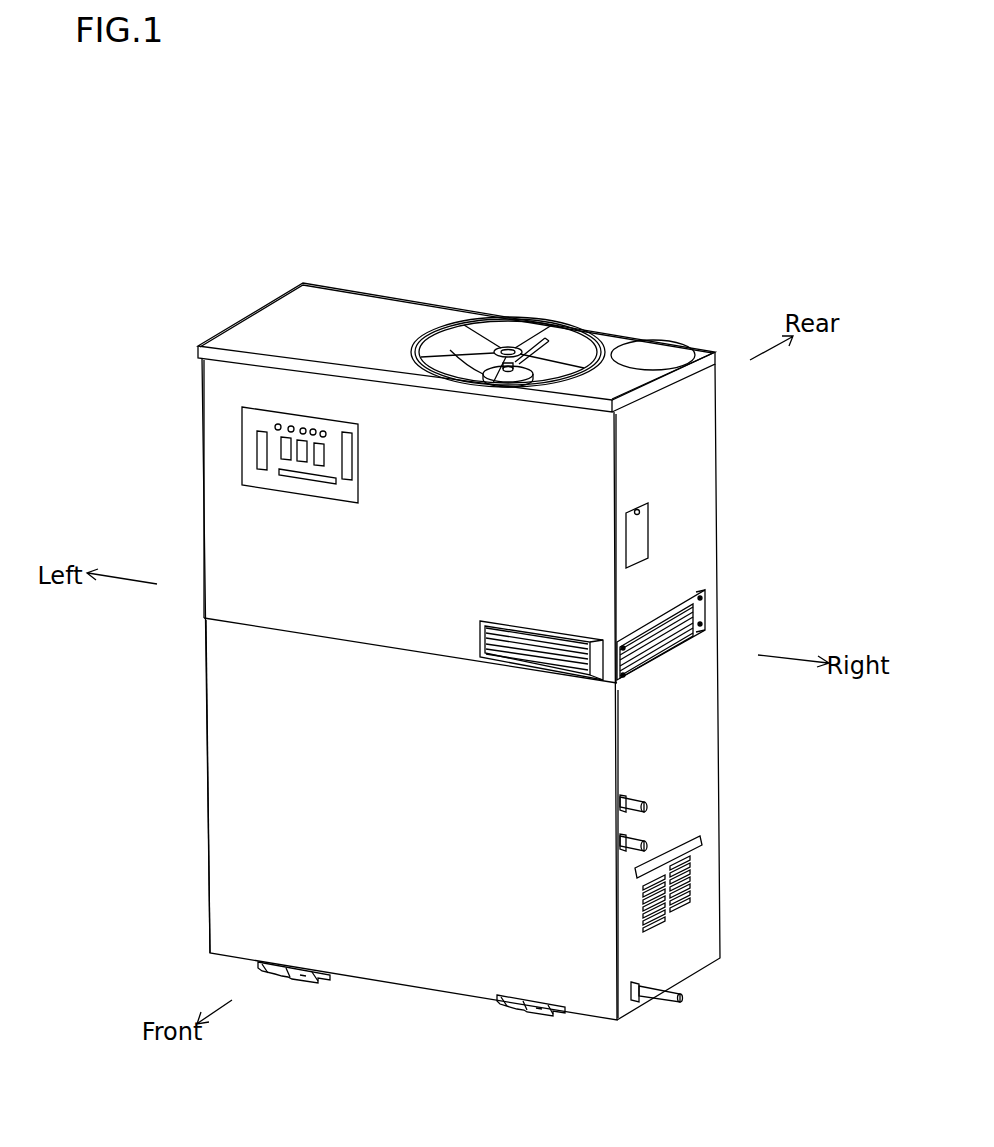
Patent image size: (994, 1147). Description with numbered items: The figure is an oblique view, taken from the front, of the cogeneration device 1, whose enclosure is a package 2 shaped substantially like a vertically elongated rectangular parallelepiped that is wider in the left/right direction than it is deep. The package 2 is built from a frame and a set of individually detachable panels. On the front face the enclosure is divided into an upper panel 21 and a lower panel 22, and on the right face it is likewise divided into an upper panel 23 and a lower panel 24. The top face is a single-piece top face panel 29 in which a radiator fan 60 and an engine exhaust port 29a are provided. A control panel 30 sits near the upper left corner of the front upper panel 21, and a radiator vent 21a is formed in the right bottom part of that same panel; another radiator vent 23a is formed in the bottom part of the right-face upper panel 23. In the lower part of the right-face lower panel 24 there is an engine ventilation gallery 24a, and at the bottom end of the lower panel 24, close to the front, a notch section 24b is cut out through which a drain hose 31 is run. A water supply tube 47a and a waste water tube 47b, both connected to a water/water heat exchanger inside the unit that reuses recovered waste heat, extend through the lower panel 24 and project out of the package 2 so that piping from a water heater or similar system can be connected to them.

The cogeneration device 1 is at (724, 238).
The package 2 is at (372, 285).
The upper panel 21 is at (240, 540).
The radiator vent 21a is at (560, 680).
The lower panel 22 is at (240, 795).
The upper panel 23 is at (690, 492).
The radiator vent 23a is at (690, 640).
The lower panel 24 is at (690, 748).
The engine ventilation gallery 24a is at (690, 893).
The notch section 24b is at (636, 1003).
The top face panel 29 is at (277, 318).
The engine exhaust port 29a is at (668, 350).
The control panel 30 is at (275, 448).
The drain hose 31 is at (675, 1000).
The water supply tube 47a is at (648, 805).
The waste water tube 47b is at (648, 843).
The radiator fan 60 is at (505, 333).